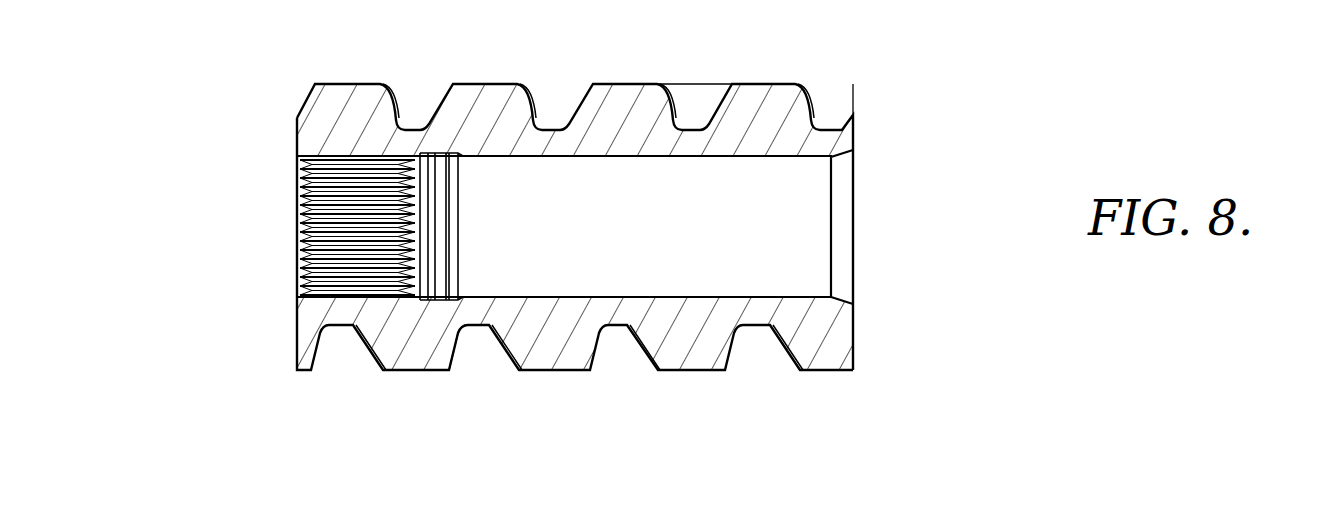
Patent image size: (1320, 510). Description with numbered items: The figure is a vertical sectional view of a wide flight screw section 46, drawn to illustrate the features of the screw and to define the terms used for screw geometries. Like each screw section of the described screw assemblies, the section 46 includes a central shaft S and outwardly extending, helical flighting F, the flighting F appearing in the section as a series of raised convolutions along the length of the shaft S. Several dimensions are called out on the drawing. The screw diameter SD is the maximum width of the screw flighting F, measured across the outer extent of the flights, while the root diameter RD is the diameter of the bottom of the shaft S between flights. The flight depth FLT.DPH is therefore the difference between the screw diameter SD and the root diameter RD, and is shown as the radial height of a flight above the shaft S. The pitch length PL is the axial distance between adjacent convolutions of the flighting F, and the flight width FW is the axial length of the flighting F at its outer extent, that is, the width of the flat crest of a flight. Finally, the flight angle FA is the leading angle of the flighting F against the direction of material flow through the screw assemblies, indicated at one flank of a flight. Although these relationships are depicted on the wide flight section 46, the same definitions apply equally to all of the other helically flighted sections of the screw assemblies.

The wide flight screw section 46 is at (763, 83).
The flight width FW is at (557, 36).
The pitch length PL is at (732, 36).
The root diameter RD is at (853, 130).
The screw diameter SD is at (795, 84).
The flight depth FLT.DPH is at (618, 325).
The flight angle FA is at (774, 325).
The central shaft S is at (477, 312).
The helical flighting F is at (543, 360).